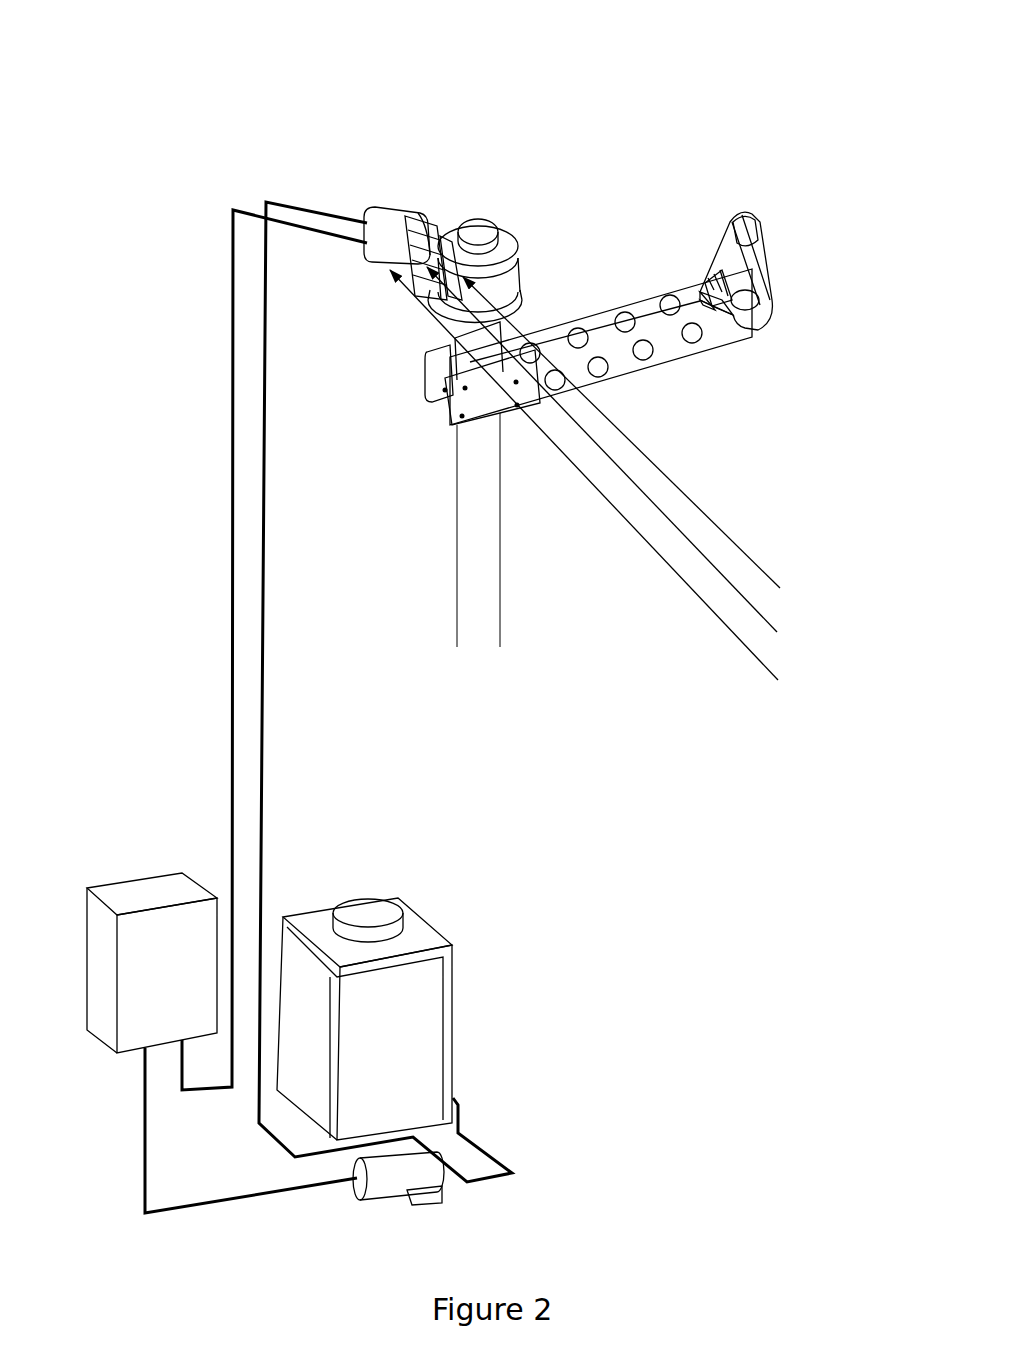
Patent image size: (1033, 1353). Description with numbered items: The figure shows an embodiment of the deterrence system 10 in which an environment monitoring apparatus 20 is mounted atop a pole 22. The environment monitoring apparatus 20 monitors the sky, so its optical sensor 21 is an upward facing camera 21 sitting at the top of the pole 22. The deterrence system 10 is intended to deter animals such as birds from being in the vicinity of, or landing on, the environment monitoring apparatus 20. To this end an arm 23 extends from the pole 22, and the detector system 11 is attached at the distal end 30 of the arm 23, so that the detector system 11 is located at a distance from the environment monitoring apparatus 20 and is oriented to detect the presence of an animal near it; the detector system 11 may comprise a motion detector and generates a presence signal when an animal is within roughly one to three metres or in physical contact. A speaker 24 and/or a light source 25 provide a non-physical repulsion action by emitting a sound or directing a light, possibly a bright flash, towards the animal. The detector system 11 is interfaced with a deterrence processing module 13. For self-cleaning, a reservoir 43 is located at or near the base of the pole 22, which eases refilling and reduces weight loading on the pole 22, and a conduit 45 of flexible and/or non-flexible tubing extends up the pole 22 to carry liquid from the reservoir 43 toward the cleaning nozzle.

The deterrence system 10 is at (88, 98).
The detector system 11 is at (741, 270).
The deterrence processing module 13 is at (226, 1030).
The environment monitoring apparatus 20 is at (527, 268).
The optical sensor 21 is at (489, 216).
The pole 22 is at (490, 455).
The arm 23 is at (679, 362).
The speaker 24 is at (711, 312).
The light source 25 is at (707, 305).
The distal end 30 is at (779, 308).
The reservoir 43 is at (447, 933).
The conduit 45 is at (266, 540).